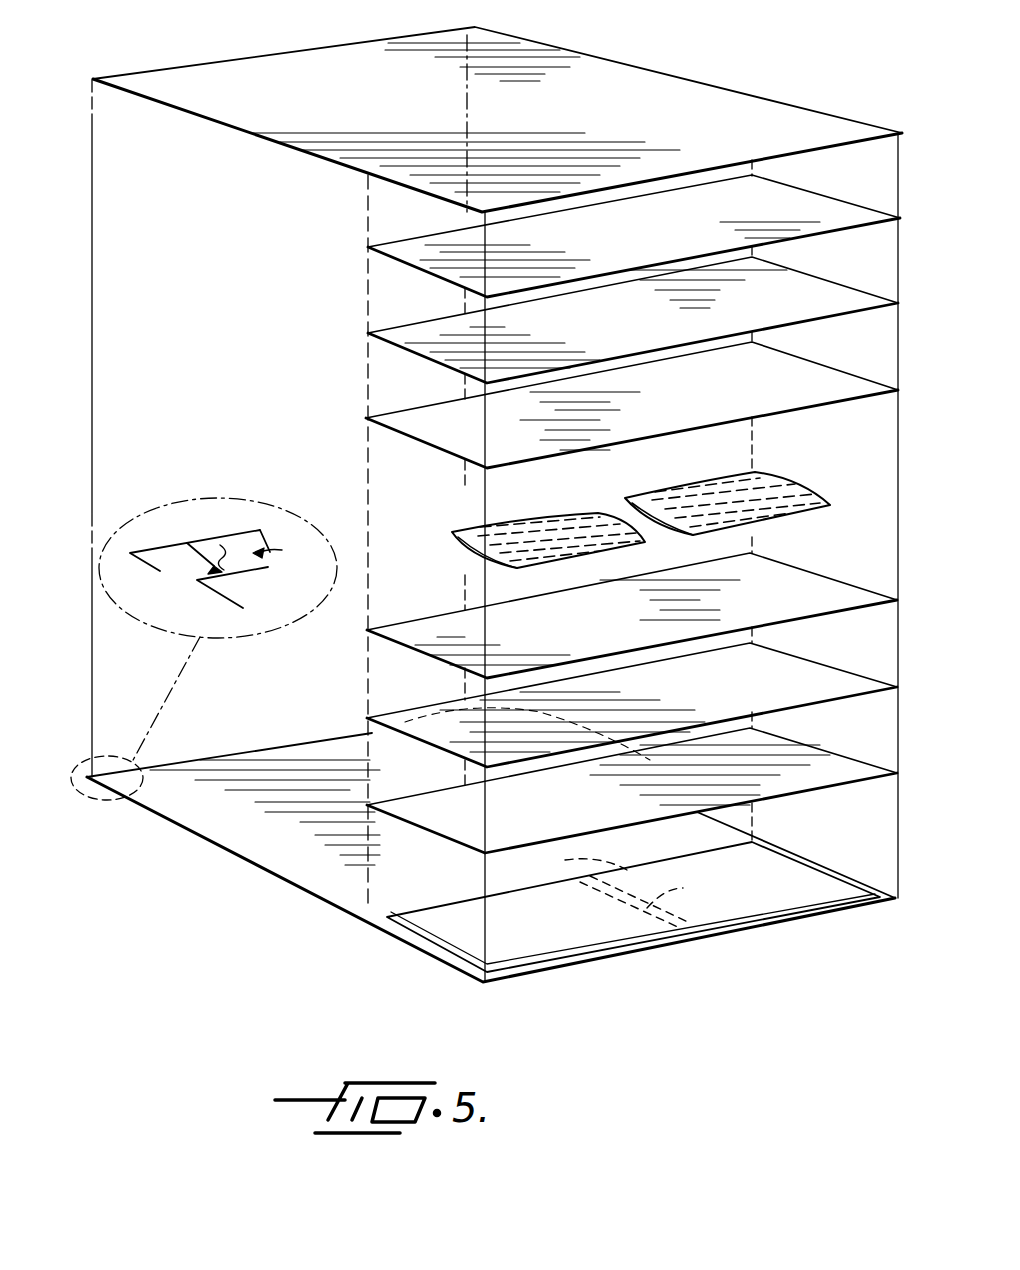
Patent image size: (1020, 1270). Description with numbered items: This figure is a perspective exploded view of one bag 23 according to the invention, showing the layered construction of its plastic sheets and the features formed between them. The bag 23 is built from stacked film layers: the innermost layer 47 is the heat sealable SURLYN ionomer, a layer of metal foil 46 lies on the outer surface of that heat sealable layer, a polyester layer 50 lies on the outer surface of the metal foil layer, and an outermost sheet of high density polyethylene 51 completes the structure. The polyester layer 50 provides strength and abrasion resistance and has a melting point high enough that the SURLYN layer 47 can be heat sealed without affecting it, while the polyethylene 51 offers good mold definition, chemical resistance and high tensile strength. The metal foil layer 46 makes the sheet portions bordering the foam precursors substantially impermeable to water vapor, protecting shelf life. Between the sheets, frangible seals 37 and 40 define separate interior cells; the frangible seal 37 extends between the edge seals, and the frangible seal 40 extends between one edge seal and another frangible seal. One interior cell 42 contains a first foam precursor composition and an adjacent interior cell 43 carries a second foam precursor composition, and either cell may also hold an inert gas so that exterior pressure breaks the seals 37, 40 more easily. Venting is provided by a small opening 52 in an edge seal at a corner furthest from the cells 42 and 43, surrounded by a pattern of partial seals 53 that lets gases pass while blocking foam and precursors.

The bag 23 is at (770, 66).
The high density polyethylene sheet 51 is at (742, 140).
The polyester layer 50 is at (672, 248).
The metal foil layer 46 is at (790, 310).
The SURLYN ionomer layer 47 is at (772, 390).
The interior cell 43 is at (584, 514).
The interior cell 42 is at (718, 494).
The small opening 52 is at (150, 585).
The pattern of partial seals 53 is at (250, 589).
The frangible seal 37 is at (603, 891).
The frangible seal 40 is at (687, 888).